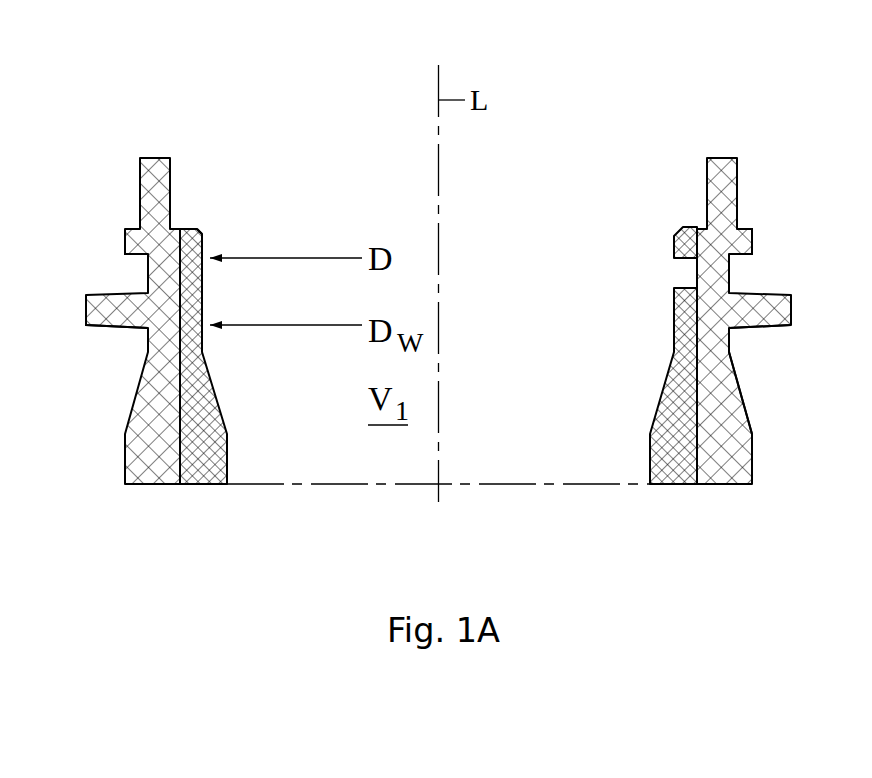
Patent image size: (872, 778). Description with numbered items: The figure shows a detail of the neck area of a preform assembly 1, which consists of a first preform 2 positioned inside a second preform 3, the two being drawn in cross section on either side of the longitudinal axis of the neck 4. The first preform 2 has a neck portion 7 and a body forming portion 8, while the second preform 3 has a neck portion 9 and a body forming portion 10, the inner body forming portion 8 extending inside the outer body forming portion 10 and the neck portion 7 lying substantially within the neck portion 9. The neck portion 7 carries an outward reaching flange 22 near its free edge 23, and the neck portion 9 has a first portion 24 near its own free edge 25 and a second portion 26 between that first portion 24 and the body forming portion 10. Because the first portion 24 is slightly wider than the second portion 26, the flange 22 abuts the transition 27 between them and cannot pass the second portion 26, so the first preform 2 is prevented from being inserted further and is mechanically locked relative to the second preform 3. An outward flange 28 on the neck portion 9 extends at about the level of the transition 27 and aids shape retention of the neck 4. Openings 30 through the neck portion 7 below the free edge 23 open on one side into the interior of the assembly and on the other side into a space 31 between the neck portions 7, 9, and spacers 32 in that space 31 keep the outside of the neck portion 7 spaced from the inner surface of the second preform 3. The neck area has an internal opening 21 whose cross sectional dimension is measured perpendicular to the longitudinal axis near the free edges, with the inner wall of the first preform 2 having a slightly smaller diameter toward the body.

The preform assembly 1 is at (746, 152).
The first preform 2 is at (683, 221).
The second preform 3 is at (746, 198).
The neck 4 is at (782, 235).
The neck portion of the first preform 7 is at (712, 304).
The body forming portion of the first preform 8 is at (665, 487).
The neck portion of the second preform 9 is at (97, 310).
The body forming portion of the second preform 10 is at (755, 457).
The internal opening 21 is at (485, 293).
The flange 22 is at (196, 220).
The free edge 23 is at (692, 226).
The first portion 24 is at (176, 175).
The free edge 25 is at (150, 152).
The second portion 26 is at (186, 292).
The transition 27 is at (199, 232).
The flange 28 is at (133, 243).
The openings 30 is at (672, 270).
The space 31 is at (732, 352).
The spacers 32 is at (740, 328).